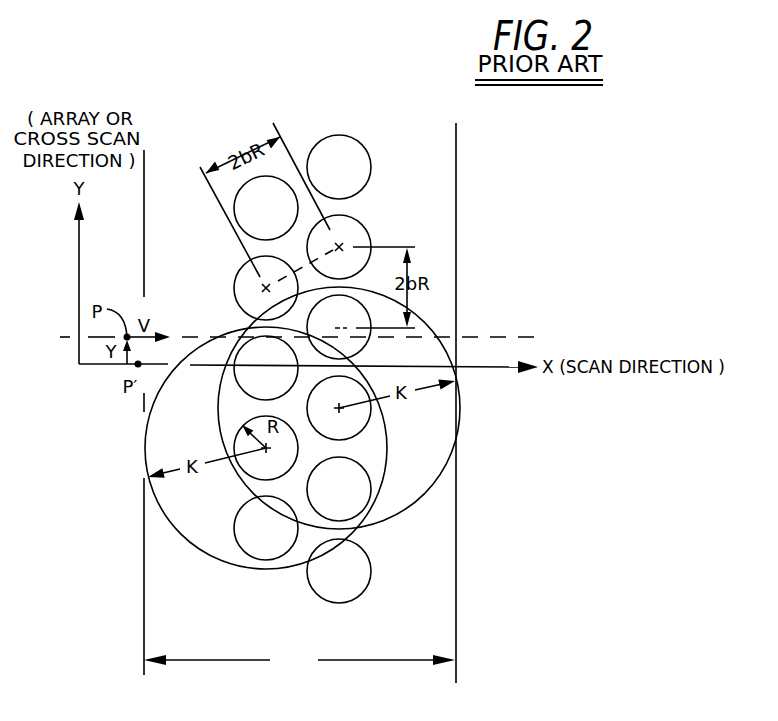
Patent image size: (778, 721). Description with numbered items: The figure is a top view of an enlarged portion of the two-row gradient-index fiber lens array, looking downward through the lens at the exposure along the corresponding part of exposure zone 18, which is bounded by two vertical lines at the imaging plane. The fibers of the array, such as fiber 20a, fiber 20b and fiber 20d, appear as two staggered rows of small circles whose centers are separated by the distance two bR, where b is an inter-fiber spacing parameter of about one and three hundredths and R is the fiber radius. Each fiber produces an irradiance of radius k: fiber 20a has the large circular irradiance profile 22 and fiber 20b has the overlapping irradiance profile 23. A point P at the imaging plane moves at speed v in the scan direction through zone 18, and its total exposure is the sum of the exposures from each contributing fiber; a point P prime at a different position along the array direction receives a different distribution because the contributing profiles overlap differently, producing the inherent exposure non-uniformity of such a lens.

The exposure zone 18 is at (457, 252).
The fiber 20a is at (246, 474).
The fiber 20b is at (362, 431).
The fiber 20d is at (364, 348).
The irradiance profile 22 is at (201, 550).
The irradiance profile 23 is at (458, 430).